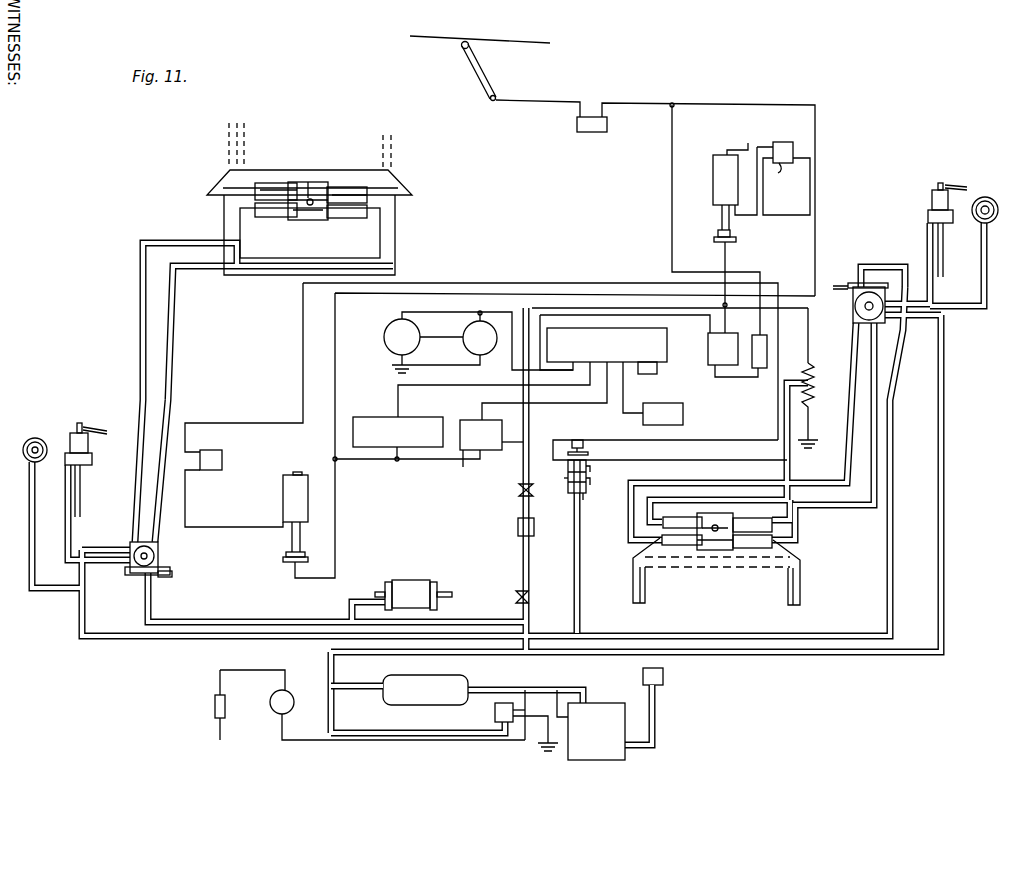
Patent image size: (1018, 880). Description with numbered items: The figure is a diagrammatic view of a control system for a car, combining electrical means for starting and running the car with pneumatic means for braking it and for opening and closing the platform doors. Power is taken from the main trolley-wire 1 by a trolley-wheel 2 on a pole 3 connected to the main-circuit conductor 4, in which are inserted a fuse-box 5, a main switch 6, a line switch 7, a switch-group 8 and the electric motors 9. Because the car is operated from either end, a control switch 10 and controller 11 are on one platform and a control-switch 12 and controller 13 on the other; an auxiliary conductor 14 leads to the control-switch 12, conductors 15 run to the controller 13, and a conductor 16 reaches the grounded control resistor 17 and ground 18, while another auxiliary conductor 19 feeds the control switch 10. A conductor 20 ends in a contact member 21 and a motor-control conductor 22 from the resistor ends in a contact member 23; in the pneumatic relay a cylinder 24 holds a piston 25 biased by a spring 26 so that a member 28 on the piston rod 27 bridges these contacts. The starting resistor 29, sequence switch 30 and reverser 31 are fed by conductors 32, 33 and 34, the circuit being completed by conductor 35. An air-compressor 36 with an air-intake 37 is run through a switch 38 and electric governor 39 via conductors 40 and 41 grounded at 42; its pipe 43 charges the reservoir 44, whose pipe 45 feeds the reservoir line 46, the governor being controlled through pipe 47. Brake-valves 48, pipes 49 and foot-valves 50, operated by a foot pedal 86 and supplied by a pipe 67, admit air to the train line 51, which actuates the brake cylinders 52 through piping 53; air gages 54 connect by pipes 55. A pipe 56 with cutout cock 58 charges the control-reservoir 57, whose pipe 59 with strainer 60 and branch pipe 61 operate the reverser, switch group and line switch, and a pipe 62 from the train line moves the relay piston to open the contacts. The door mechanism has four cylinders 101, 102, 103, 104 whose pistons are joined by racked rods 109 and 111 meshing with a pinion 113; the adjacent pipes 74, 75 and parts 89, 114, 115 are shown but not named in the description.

The main trolley-wire 1 is at (428, 36).
The trolley-wheel 2 is at (461, 46).
The pole 3 is at (476, 70).
The main-circuit conductor 4 is at (525, 101).
The fuse-box 5 is at (580, 132).
The main switch 6 is at (762, 370).
The line switch 7 is at (724, 370).
The switch-group 8 is at (650, 374).
The electric motor 9 is at (478, 342).
The control switch 10 is at (785, 141).
The controller 11 is at (713, 188).
The control-switch 12 is at (222, 456).
The controller 13 is at (283, 503).
The auxiliary conductor 14 is at (710, 105).
The conductors 15 is at (340, 325).
The conductor 16 is at (757, 146).
The control resistor 17 is at (817, 401).
The ground 18 is at (815, 440).
The auxiliary conductor 19 is at (786, 186).
The conductor 20 is at (670, 440).
The contact member 21 is at (568, 466).
The motor-control conductor 22 is at (734, 452).
The contact member 23 is at (588, 453).
The cylinder 24 is at (599, 487).
The piston or plunger 25 is at (566, 486).
The spring 26 is at (585, 500).
The piston rod 27 is at (599, 468).
The member 28 is at (572, 436).
The starting resistor 29 is at (683, 414).
The sequence switch 30 is at (383, 417).
The reverser 31 is at (476, 451).
The conductor 32 is at (628, 410).
The conductor 33 is at (557, 408).
The conductor 34 is at (603, 403).
The conductor 35 is at (360, 460).
The air-compressor 36 is at (603, 703).
The air-intake 37 is at (658, 708).
The switch 38 is at (271, 698).
The electric governor 39 is at (495, 716).
The conductor 40 is at (524, 703).
The conductor 41 is at (555, 692).
The ground 42 is at (545, 752).
The pipe 43 is at (525, 684).
The air-receiving tank or reservoir 44 is at (404, 675).
The pipe 45 is at (317, 692).
The reservoir line 46 is at (958, 418).
The pipe 47 is at (418, 719).
The brake-valve 48 is at (928, 215).
The air conveying pipe 49 is at (485, 391).
The foot-valve 50 is at (128, 568).
The train line 51 is at (337, 597).
The brake cylinder 52 is at (420, 580).
The piping 53 is at (347, 611).
The air gage 54 is at (992, 200).
The pipe 55 is at (522, 422).
The pipe 56 is at (520, 562).
The control-reservoir 57 is at (517, 528).
The cutout cock 58 is at (516, 597).
The pipe 59 is at (512, 443).
The strainer 60 is at (517, 492).
The pipe 61 is at (700, 322).
The air-conveying pipe 62 is at (588, 563).
The pipe 67 is at (950, 333).
The brake pipe 74 is at (112, 322).
The brake pipe 75 is at (178, 330).
The foot lever or pedal 86 is at (172, 573).
The pump pipe 89 is at (855, 275).
The cylinder 101 is at (755, 548).
The cylinder 102 is at (675, 545).
The cylinder 103 is at (740, 517).
The cylinder 104 is at (675, 517).
The rod 109 is at (712, 513).
The rod 111 is at (308, 182).
The pinion 113 is at (718, 532).
The truck frame 114 is at (207, 180).
The wheel 115 is at (632, 580).